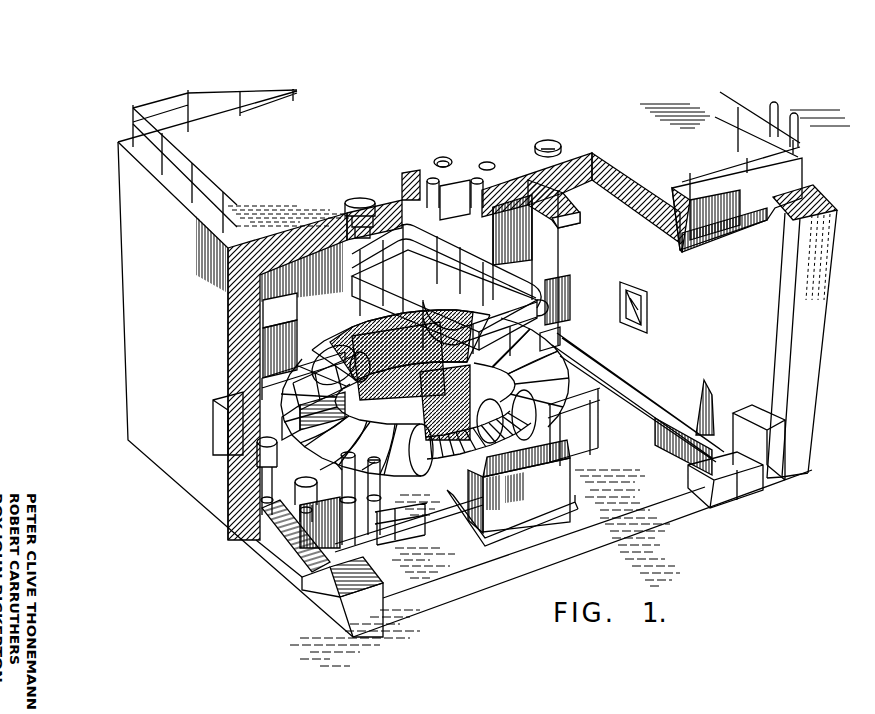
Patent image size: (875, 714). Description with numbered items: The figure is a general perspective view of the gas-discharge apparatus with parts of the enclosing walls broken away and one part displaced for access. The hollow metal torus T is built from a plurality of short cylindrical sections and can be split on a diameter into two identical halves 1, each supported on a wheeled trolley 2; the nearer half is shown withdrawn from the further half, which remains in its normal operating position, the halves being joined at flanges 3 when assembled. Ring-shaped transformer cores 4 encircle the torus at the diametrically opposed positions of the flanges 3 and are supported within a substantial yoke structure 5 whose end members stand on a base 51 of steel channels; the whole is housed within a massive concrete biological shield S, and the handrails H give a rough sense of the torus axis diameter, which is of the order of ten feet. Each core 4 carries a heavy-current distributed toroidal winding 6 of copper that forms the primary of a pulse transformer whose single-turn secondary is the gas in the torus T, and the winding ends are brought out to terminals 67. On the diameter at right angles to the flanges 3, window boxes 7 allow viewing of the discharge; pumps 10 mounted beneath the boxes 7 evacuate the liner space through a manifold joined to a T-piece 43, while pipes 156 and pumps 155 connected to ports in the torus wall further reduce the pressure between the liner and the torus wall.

The torus half 1 is at (378, 458).
The wheeled trolley 2 is at (592, 437).
The flange 3 is at (342, 363).
The transformer core 4 is at (524, 464).
The yoke structure 5 is at (352, 325).
The toroidal winding 6 is at (460, 478).
The box 7 is at (294, 413).
The pump 10 is at (290, 522).
The T-piece 43 is at (260, 463).
The base 51 is at (540, 520).
The terminal 67 is at (415, 356).
The pump 155 is at (363, 537).
The pipe 156 is at (352, 462).
The handrail H is at (200, 172).
The biological shield S is at (233, 351).
The torus T is at (545, 361).